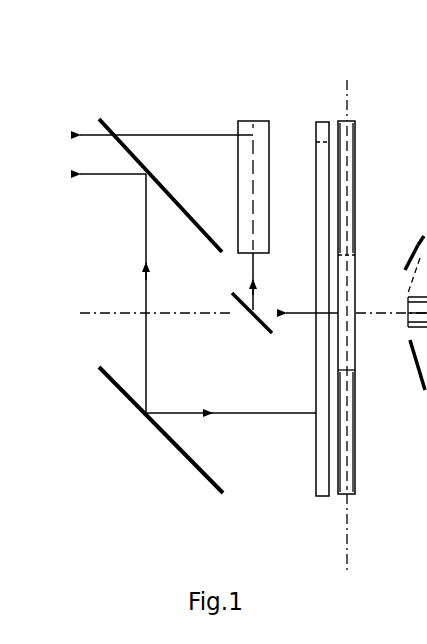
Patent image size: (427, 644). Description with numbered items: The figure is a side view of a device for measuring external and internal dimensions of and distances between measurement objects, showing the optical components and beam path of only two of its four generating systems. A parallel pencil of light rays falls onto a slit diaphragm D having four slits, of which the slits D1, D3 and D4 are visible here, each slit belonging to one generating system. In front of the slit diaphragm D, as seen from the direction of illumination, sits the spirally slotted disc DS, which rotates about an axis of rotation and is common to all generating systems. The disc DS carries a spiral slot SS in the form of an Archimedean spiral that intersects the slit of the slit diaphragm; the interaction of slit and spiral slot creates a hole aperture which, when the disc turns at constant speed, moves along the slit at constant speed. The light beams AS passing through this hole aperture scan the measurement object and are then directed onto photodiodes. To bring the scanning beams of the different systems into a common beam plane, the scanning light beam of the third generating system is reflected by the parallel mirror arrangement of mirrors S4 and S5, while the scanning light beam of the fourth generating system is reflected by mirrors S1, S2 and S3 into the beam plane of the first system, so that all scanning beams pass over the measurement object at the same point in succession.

The light beams AS is at (110, 180).
The spiral slot SS is at (316, 416).
The mirror S1 is at (262, 310).
The mirror S2 is at (269, 140).
The mirror S3 is at (258, 122).
The mirror S4 is at (190, 465).
The mirror S5 is at (205, 235).
The spirally slotted disc DS is at (323, 110).
The slit diaphragm D is at (354, 112).
The slit D1 is at (355, 250).
The slit D3 is at (353, 495).
The slit D4 is at (417, 373).